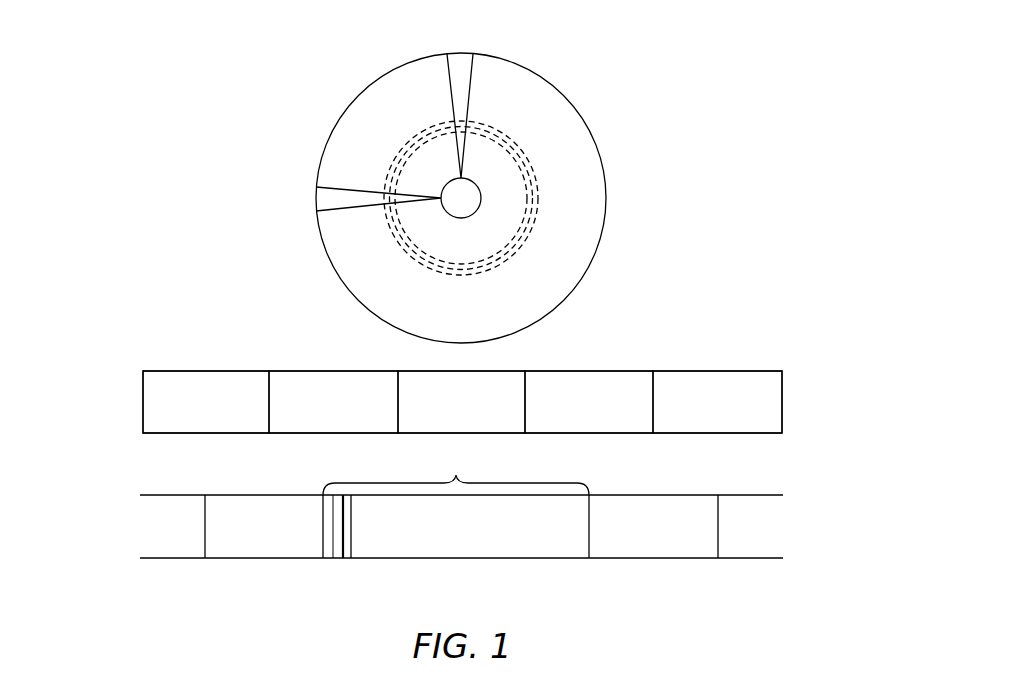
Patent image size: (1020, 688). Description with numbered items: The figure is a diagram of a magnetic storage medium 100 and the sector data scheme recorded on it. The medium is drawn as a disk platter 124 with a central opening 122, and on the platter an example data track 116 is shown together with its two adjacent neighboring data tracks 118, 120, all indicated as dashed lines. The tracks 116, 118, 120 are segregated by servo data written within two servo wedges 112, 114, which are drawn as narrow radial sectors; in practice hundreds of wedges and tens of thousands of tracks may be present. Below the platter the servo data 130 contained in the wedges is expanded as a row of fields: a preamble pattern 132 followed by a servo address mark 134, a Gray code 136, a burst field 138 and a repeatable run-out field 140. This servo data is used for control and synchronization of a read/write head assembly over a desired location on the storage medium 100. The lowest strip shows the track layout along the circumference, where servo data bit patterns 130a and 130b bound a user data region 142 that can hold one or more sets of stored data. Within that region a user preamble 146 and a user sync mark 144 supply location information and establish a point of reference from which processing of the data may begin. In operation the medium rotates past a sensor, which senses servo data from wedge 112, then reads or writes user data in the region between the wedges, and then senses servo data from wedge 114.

The magnetic storage medium 100 is at (345, 68).
The servo wedge 112 is at (316, 197).
The servo wedge 114 is at (461, 54).
The data track 116 is at (533, 212).
The adjacent neighboring data track 118 is at (522, 242).
The adjacent neighboring data track 120 is at (531, 178).
The spindle hole 122 is at (467, 217).
The disk platter 124 is at (602, 235).
The servo data 130 is at (700, 345).
The servo data bit pattern 130a is at (264, 526).
The servo data bit pattern 130b is at (653, 526).
The preamble pattern 132 is at (206, 402).
The servo address mark (SAM) 134 is at (333, 402).
The Gray code 136 is at (461, 402).
The burst field 138 is at (589, 402).
The repeatable run-out (RRO) field 140 is at (717, 402).
The user data region 142 is at (515, 462).
The user sync mark 144 is at (527, 603).
The user preamble 146 is at (334, 572).